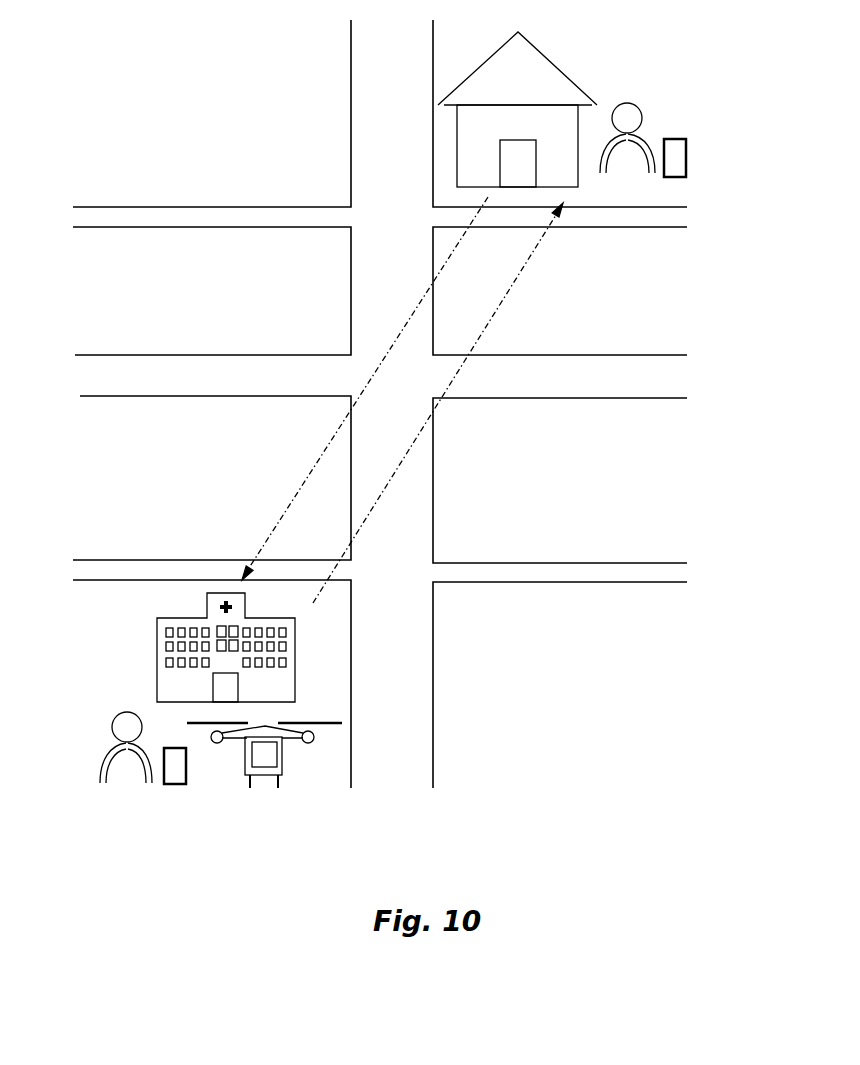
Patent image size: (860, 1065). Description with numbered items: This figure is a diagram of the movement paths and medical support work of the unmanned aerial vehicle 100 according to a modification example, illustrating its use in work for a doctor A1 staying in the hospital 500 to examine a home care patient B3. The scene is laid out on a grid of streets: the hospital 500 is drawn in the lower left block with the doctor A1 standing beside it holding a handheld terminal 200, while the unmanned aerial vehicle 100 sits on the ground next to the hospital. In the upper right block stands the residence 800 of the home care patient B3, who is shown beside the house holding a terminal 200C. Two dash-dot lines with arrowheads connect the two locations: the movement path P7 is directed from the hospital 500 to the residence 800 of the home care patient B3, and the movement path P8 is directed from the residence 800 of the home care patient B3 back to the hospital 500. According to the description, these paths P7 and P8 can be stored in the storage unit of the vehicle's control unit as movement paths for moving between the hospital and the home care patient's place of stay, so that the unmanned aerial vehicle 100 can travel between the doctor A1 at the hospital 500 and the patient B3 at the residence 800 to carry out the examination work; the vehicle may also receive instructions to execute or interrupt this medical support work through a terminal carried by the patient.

The residence 800 is at (545, 55).
The home care patient B3 is at (640, 133).
The recipient user terminal 200C is at (688, 168).
The movement path P7 is at (508, 290).
The movement path P8 is at (320, 455).
The hospital 500 is at (157, 640).
The doctor A1 is at (117, 772).
The user terminal 200 is at (185, 786).
The unmanned aerial vehicle 100 is at (299, 787).